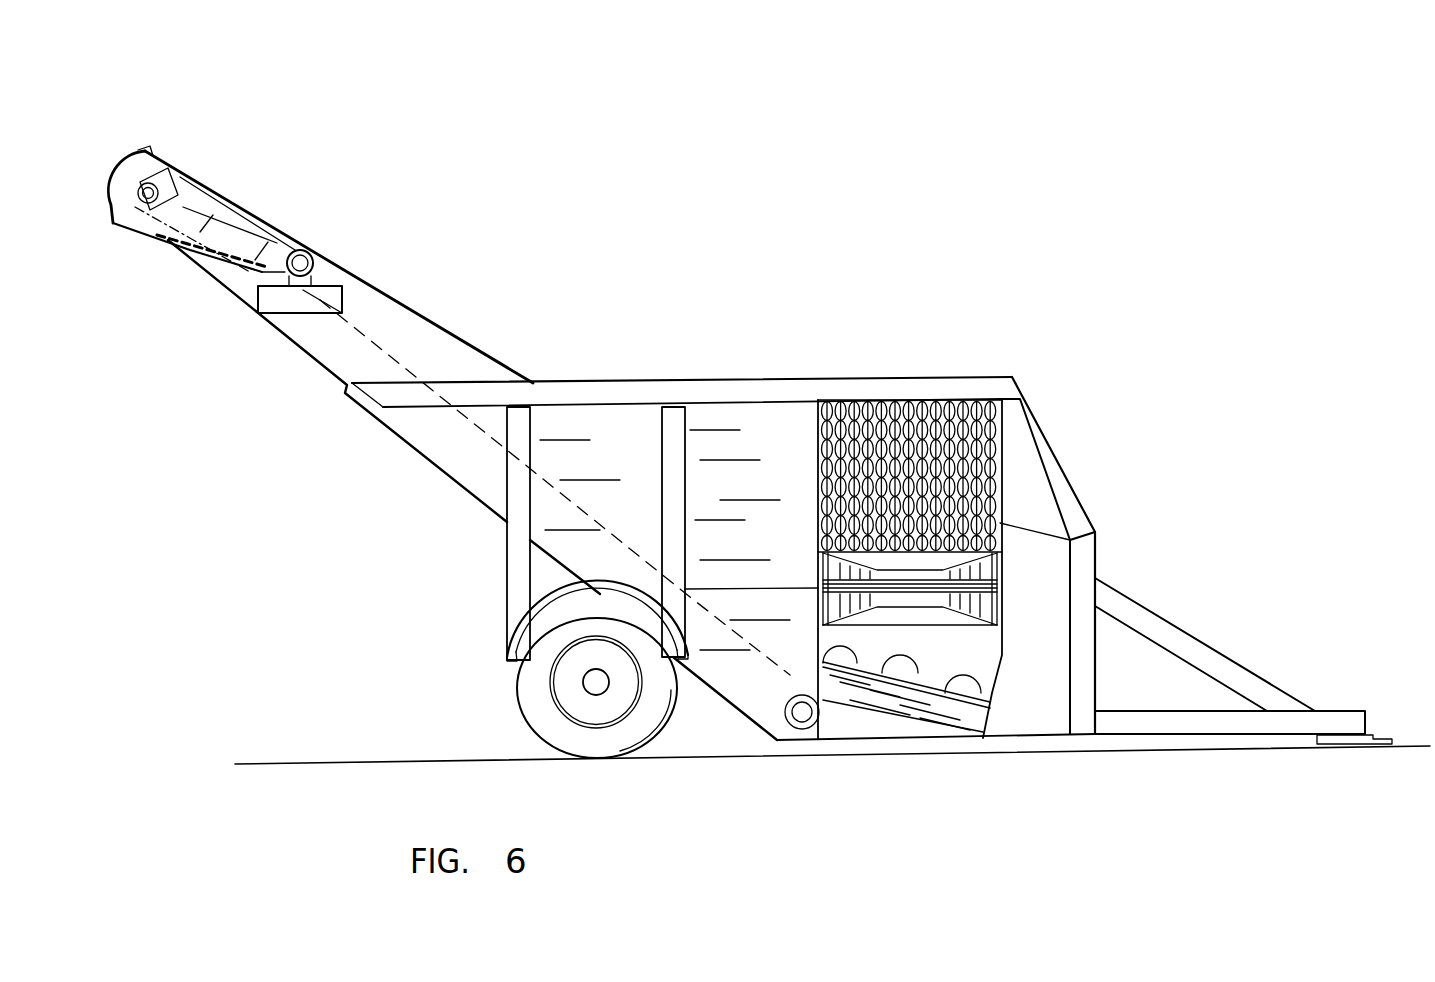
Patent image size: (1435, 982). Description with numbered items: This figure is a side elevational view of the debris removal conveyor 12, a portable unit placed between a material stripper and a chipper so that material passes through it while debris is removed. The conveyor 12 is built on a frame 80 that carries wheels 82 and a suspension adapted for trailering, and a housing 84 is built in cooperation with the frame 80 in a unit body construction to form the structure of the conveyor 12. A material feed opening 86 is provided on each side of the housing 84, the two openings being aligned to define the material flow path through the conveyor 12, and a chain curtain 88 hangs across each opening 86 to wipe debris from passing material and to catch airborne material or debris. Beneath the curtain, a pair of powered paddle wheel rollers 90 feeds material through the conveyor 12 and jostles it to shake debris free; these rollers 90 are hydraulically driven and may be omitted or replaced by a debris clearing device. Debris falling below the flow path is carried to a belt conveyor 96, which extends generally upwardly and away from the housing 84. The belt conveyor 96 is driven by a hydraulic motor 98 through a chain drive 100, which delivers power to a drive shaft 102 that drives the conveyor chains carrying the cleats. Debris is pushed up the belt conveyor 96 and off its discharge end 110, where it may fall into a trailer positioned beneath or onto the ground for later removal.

The debris removal conveyor 12 is at (957, 307).
The frame 80 is at (1052, 440).
The wheels 82 is at (537, 698).
The housing 84 is at (757, 427).
The material feed opening 86 is at (808, 544).
The chain curtain 88 is at (828, 482).
The powered paddle wheel rollers 90 is at (917, 603).
The belt conveyor 96 is at (433, 232).
The hydraulic motor 98 is at (300, 250).
The chain drive 100 is at (168, 242).
The drive shaft 102 is at (150, 183).
The discharge end 110 is at (117, 152).